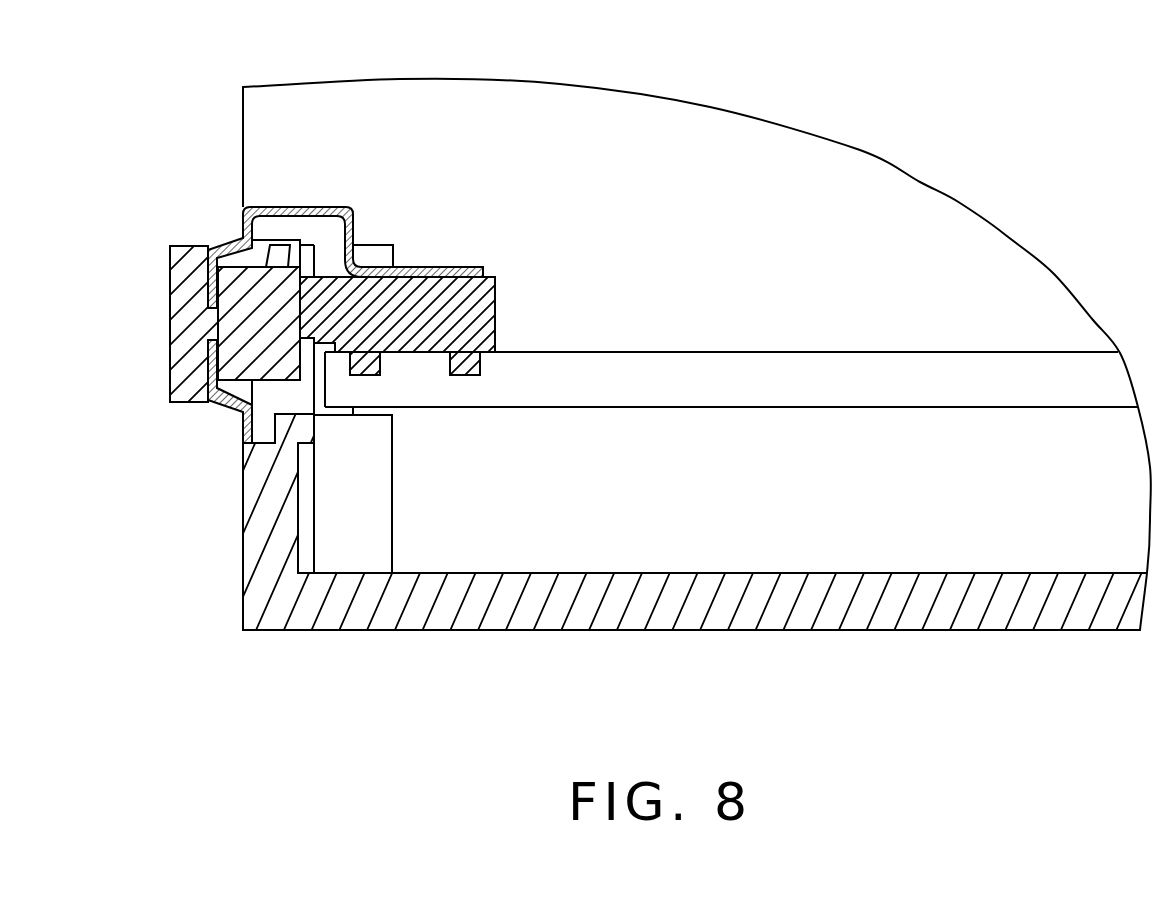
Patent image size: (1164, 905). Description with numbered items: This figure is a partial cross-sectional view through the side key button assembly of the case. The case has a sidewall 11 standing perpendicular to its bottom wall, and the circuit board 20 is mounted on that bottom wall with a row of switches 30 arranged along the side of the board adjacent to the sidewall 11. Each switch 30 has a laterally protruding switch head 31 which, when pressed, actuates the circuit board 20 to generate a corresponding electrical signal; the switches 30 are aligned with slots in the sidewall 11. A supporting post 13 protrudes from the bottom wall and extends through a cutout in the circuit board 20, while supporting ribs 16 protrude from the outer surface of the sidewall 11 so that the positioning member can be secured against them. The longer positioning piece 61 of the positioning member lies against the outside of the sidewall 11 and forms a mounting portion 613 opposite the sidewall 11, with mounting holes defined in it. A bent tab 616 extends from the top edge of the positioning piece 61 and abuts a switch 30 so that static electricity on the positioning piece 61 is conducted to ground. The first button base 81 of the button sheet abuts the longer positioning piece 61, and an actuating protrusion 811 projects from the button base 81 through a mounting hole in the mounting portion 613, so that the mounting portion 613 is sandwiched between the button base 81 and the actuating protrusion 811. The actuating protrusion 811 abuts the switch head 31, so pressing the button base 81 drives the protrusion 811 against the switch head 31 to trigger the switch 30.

The sidewall 11 is at (263, 527).
The supporting post 13 is at (370, 257).
The supporting rib 16 is at (275, 257).
The circuit board 20 is at (933, 380).
The switch 30 is at (497, 300).
The switch head 31 is at (297, 312).
The longer positioning piece 61 is at (244, 222).
The mounting portion 613 is at (198, 282).
The bent tab 616 is at (283, 207).
The first button base 81 is at (188, 262).
The actuating protrusion 811 is at (247, 350).